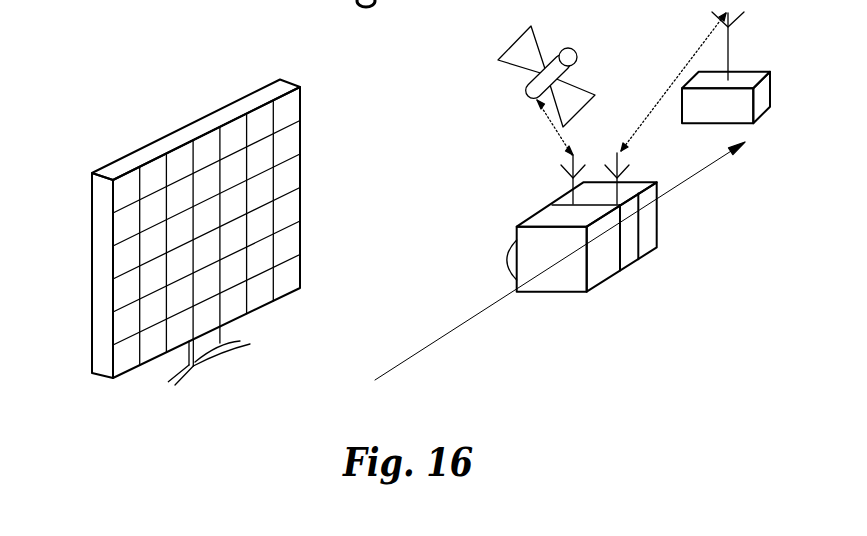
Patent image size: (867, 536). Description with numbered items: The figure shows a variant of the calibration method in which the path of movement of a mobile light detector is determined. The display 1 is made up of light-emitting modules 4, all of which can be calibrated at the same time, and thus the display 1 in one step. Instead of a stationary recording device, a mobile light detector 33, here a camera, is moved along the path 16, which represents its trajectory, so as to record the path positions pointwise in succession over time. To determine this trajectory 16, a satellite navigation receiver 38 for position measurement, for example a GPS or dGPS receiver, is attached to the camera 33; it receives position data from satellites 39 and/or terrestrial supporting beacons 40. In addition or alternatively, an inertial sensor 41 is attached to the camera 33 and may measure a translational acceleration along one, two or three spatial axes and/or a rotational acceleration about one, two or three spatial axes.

The display 1 is at (103, 377).
The light-emitting modules 4 is at (297, 240).
The path 16 is at (467, 322).
The mobile light detector 33 is at (613, 275).
The satellite navigation receiver 38 is at (633, 263).
The satellites 39 is at (533, 78).
The terrestrial supporting beacons 40 is at (738, 125).
The inertial sensor 41 is at (650, 252).